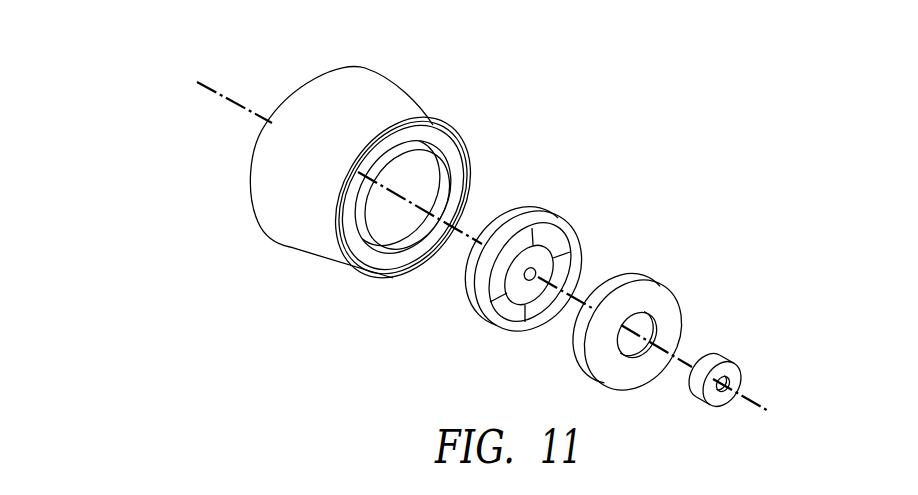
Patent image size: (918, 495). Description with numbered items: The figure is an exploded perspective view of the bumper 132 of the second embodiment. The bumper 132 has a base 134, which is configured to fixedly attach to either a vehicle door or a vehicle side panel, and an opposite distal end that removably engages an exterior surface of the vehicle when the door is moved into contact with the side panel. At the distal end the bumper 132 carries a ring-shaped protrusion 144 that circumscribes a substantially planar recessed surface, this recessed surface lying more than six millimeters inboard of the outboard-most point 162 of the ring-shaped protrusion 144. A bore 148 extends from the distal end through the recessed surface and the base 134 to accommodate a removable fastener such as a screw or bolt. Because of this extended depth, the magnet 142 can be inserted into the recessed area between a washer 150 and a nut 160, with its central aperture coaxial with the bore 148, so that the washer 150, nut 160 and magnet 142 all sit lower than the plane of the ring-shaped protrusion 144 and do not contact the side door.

The bumper 132 is at (300, 155).
The base 134 is at (326, 88).
The ring-shaped protrusion 144 is at (425, 143).
The bore 148 is at (358, 182).
The outboard-most point 162 is at (418, 208).
The washer 150 is at (567, 234).
The magnet 142 is at (665, 298).
The nut 160 is at (737, 366).